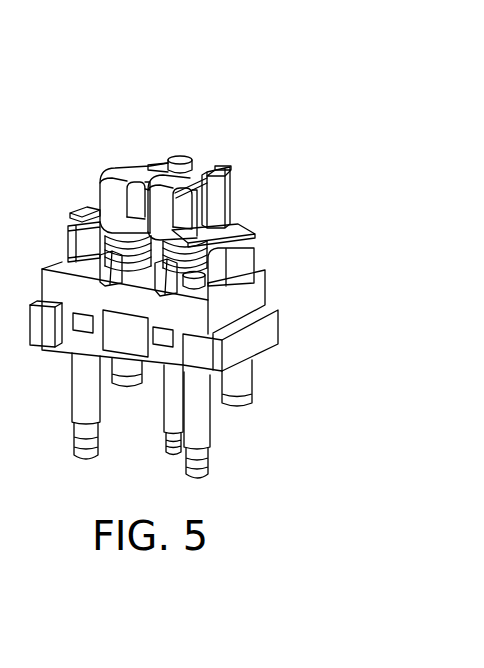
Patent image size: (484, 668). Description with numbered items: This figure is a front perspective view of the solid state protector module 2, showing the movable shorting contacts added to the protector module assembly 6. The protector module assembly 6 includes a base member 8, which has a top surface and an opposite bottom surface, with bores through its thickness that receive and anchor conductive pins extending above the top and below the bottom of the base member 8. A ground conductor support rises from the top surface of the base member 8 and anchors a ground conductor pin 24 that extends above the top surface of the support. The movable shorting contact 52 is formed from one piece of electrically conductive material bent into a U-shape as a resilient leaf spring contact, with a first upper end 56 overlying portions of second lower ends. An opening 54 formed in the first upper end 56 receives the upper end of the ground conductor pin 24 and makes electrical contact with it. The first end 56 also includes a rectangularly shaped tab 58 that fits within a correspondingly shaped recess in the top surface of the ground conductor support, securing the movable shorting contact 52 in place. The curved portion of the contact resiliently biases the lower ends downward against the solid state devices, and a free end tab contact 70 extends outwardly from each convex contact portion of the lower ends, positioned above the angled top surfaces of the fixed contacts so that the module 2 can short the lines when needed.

The solid state protector module 2 is at (147, 79).
The protector module assembly 6 is at (300, 198).
The base member 8 is at (248, 298).
The ground conductor pin 24 is at (182, 157).
The movable shorting contact 52 is at (115, 160).
The opening 54 is at (138, 161).
The first upper end 56 is at (217, 182).
The rectangularly shaped tab 58 is at (208, 170).
The free end tab contact 70 is at (86, 211).